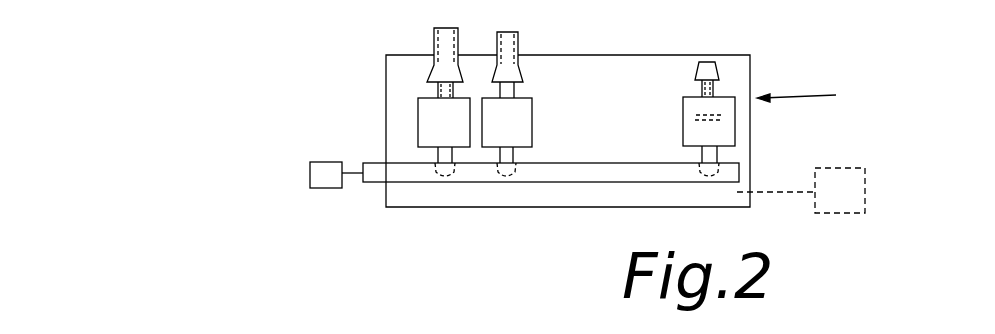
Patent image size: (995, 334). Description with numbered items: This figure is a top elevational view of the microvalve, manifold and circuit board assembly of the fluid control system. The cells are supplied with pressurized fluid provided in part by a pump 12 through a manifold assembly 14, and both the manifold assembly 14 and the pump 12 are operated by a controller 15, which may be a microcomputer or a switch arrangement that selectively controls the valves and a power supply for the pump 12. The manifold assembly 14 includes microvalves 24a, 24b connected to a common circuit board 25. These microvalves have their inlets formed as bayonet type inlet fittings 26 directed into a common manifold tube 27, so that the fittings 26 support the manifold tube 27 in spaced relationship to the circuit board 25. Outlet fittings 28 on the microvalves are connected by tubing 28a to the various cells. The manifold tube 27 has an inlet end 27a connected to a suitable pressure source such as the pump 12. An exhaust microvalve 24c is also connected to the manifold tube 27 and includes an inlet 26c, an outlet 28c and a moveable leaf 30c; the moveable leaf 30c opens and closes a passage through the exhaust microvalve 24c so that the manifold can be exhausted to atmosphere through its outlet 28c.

The pump 12 is at (310, 165).
The manifold assembly 14 is at (814, 95).
The controller 15 is at (865, 198).
The microvalve 24a is at (427, 113).
The microvalve 24b is at (523, 108).
The exhaust microvalve 24c is at (727, 129).
The circuit board 25 is at (750, 62).
The bayonet type inlet fittings 26 is at (442, 153).
The inlet 26c is at (720, 155).
The manifold tube 27 is at (572, 170).
The inlet end 27a is at (363, 178).
The outlet fittings 28 is at (443, 93).
The tubing 28a is at (509, 39).
The outlet 28c is at (712, 88).
The moveable leaf 30c is at (683, 128).